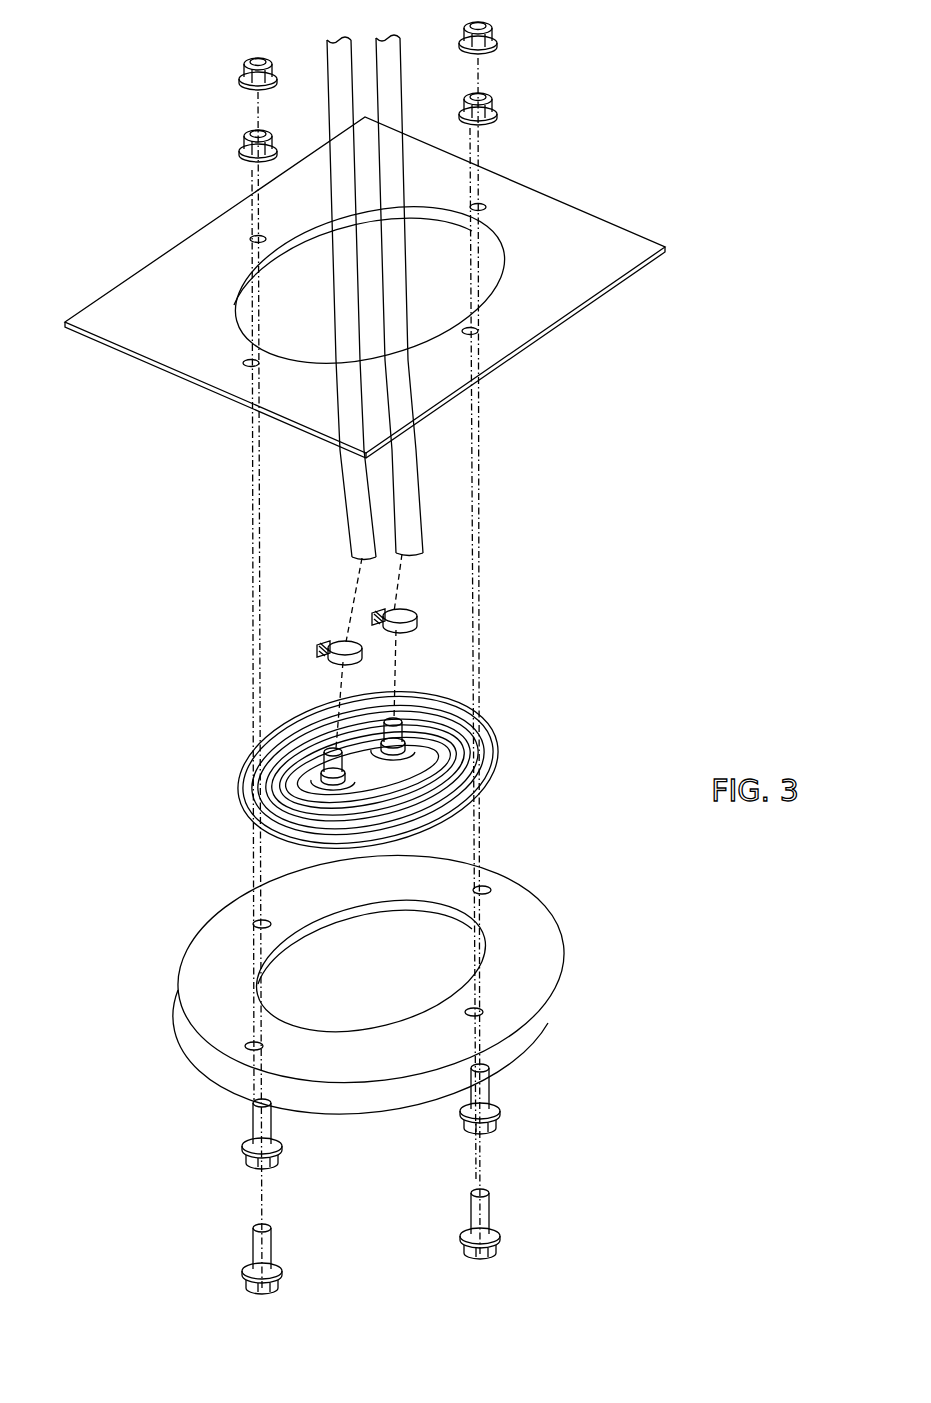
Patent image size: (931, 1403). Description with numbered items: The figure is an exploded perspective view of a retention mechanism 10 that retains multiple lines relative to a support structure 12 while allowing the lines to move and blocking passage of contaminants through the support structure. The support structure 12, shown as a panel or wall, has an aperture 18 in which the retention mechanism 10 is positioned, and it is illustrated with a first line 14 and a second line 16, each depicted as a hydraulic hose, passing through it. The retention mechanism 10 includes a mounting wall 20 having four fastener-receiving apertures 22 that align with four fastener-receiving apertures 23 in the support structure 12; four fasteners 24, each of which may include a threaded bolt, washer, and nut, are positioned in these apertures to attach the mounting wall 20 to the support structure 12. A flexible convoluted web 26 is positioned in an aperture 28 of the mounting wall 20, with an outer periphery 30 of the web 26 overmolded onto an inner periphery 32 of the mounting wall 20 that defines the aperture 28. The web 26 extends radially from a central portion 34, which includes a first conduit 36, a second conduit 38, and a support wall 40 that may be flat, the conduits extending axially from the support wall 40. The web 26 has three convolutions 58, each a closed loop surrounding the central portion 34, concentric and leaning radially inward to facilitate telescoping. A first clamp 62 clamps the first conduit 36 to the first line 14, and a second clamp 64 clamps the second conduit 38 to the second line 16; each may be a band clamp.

The retention mechanism 10 is at (190, 1081).
The support structure 12 is at (585, 242).
The first line 14 is at (340, 86).
The second line 16 is at (387, 85).
The aperture 18 is at (410, 216).
The mounting wall 20 is at (346, 974).
The fastener-receiving apertures 22 is at (270, 921).
The fastener-receiving apertures 23 is at (264, 237).
The fasteners 24 is at (279, 1161).
The flexible convoluted web 26 is at (353, 759).
The aperture 28 is at (290, 955).
The outer periphery 30 is at (242, 796).
The inner periphery 32 is at (382, 895).
The central portion 34 is at (470, 712).
The first conduit 36 is at (330, 744).
The second conduit 38 is at (404, 722).
The support wall 40 is at (450, 812).
The convolutions 58 is at (300, 756).
The first clamp 62 is at (330, 646).
The second clamp 64 is at (416, 616).